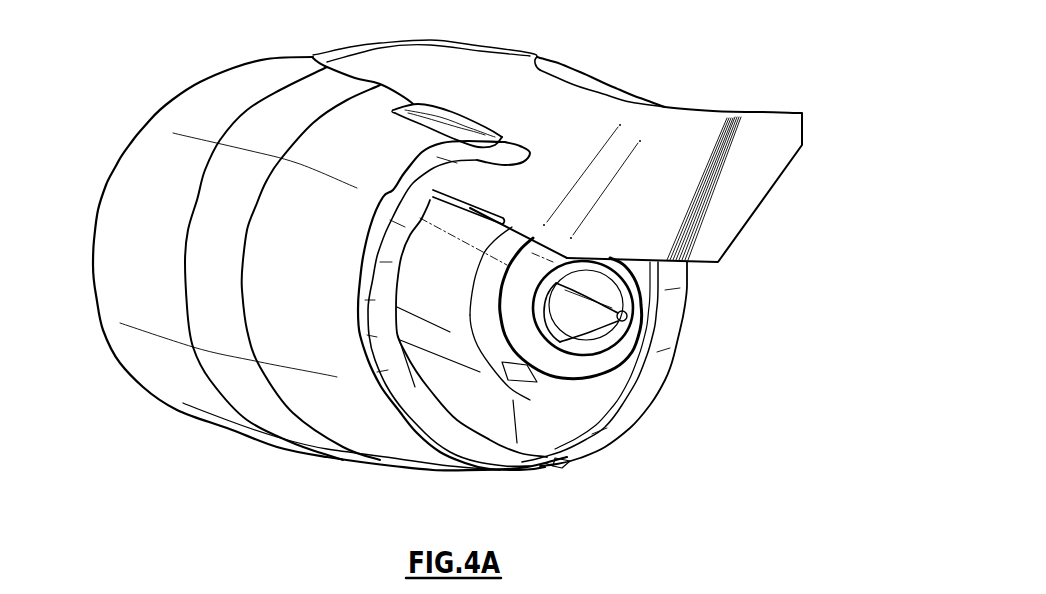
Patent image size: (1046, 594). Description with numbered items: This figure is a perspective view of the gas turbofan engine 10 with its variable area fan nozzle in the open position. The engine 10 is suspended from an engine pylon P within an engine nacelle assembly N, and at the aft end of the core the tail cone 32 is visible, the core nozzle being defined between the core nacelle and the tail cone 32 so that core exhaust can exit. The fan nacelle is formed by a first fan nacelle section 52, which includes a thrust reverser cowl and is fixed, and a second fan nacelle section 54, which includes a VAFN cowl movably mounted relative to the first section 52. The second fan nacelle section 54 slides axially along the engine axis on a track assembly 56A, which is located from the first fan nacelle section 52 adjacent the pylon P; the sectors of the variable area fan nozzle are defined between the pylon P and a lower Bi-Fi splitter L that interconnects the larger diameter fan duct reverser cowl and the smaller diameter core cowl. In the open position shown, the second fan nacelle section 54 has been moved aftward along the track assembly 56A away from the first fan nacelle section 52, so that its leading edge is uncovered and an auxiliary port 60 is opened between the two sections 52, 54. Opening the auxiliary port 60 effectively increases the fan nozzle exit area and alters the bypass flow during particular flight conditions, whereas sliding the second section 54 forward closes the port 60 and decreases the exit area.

The engine nacelle assembly N is at (298, 47).
The engine pylon P is at (605, 66).
The gas turbofan engine 10 is at (804, 258).
The tail cone 32 is at (623, 310).
The first fan nacelle section 52 is at (366, 450).
The second fan nacelle section 54 is at (643, 388).
The track assembly 56A is at (452, 124).
The auxiliary port 60 is at (413, 163).
The lower Bi-Fi splitter L is at (487, 432).